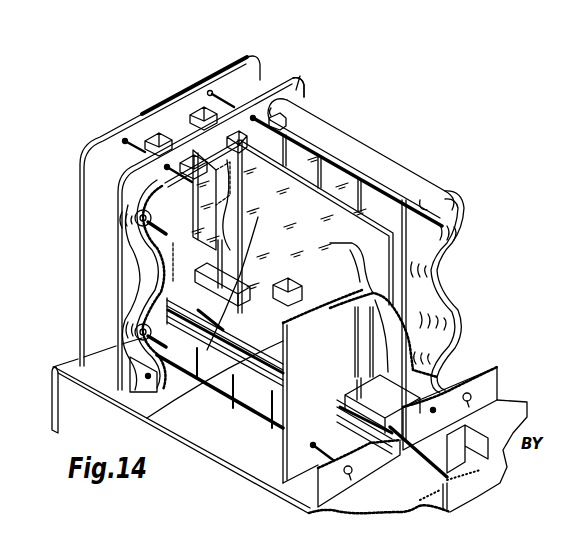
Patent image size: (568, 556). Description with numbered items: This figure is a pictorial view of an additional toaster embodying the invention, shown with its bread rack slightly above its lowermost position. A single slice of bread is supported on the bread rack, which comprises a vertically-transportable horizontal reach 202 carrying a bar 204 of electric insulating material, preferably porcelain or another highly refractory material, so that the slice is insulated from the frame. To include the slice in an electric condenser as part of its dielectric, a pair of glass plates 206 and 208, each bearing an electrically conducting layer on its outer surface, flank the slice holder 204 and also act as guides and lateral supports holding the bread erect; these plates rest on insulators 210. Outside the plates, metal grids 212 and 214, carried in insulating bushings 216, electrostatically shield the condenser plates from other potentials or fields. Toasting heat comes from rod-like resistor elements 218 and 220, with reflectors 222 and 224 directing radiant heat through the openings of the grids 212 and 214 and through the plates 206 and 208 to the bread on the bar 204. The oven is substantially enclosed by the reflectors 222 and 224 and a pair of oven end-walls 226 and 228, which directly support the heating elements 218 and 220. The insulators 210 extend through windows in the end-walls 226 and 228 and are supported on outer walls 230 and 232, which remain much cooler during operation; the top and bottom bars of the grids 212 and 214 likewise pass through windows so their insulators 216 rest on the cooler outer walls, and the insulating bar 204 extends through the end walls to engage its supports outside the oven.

The horizontal reach 202 is at (180, 441).
The bar of electric insulating material 204 is at (148, 420).
The glass plate 206 is at (196, 206).
The glass plate 208 is at (404, 248).
The insulator 210 is at (146, 132).
The metal grid 212 is at (245, 214).
The metal grid 214 is at (370, 185).
The insulating bushing 216 is at (210, 92).
The rod-like resistor element 218 is at (138, 326).
The rod-like resistor element 220 is at (278, 170).
The reflector 222 is at (123, 187).
The reflector 224 is at (357, 133).
The oven end-wall 226 is at (298, 75).
The oven end-wall 228 is at (285, 450).
The outer wall 230 is at (248, 52).
The outer wall 232 is at (318, 487).